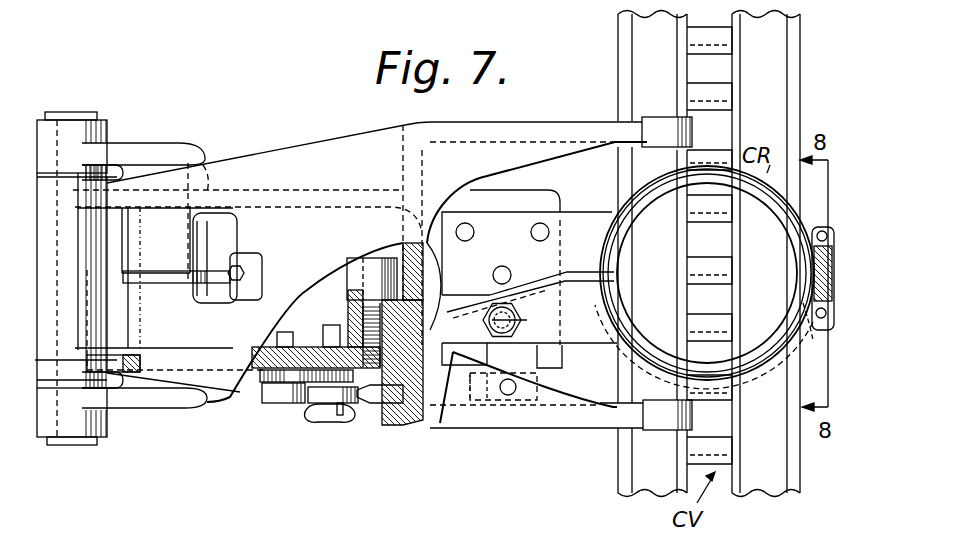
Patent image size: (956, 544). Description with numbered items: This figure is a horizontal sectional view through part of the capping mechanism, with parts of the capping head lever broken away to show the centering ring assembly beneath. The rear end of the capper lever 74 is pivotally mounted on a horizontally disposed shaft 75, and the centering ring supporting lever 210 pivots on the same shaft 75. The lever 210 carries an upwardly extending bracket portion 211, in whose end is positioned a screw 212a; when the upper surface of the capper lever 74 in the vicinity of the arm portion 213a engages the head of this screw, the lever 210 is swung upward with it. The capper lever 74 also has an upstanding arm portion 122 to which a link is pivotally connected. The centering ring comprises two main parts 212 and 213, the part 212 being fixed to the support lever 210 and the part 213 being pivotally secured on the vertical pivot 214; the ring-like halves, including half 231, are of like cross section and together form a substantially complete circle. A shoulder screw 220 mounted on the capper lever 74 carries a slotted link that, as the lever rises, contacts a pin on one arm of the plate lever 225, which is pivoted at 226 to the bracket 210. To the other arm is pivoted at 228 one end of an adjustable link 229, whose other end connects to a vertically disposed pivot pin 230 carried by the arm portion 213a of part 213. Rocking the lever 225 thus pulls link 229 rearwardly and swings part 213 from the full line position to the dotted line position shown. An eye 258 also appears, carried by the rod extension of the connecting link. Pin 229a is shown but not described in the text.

The shaft 75 is at (77, 108).
The capper lever 74 is at (328, 140).
The centering ring supporting lever 210 is at (153, 409).
The pivot pin 230 is at (640, 184).
The centering ring part 212 is at (527, 278).
The centering ring part 213 is at (551, 319).
The arm portion 213a is at (528, 383).
The pin 229a is at (507, 404).
The vertical pivot 214 is at (815, 266).
The ring-like half 231 is at (644, 341).
The bracket portion 211 is at (238, 258).
The screw 212a is at (246, 273).
The upstanding arm portion 122 is at (103, 367).
The eye 258 is at (355, 272).
The plate lever 225 is at (300, 370).
The shoulder screw 220 is at (283, 398).
The pivot 226 is at (317, 398).
The pivot 228 is at (340, 416).
The adjustable link 229 is at (393, 401).